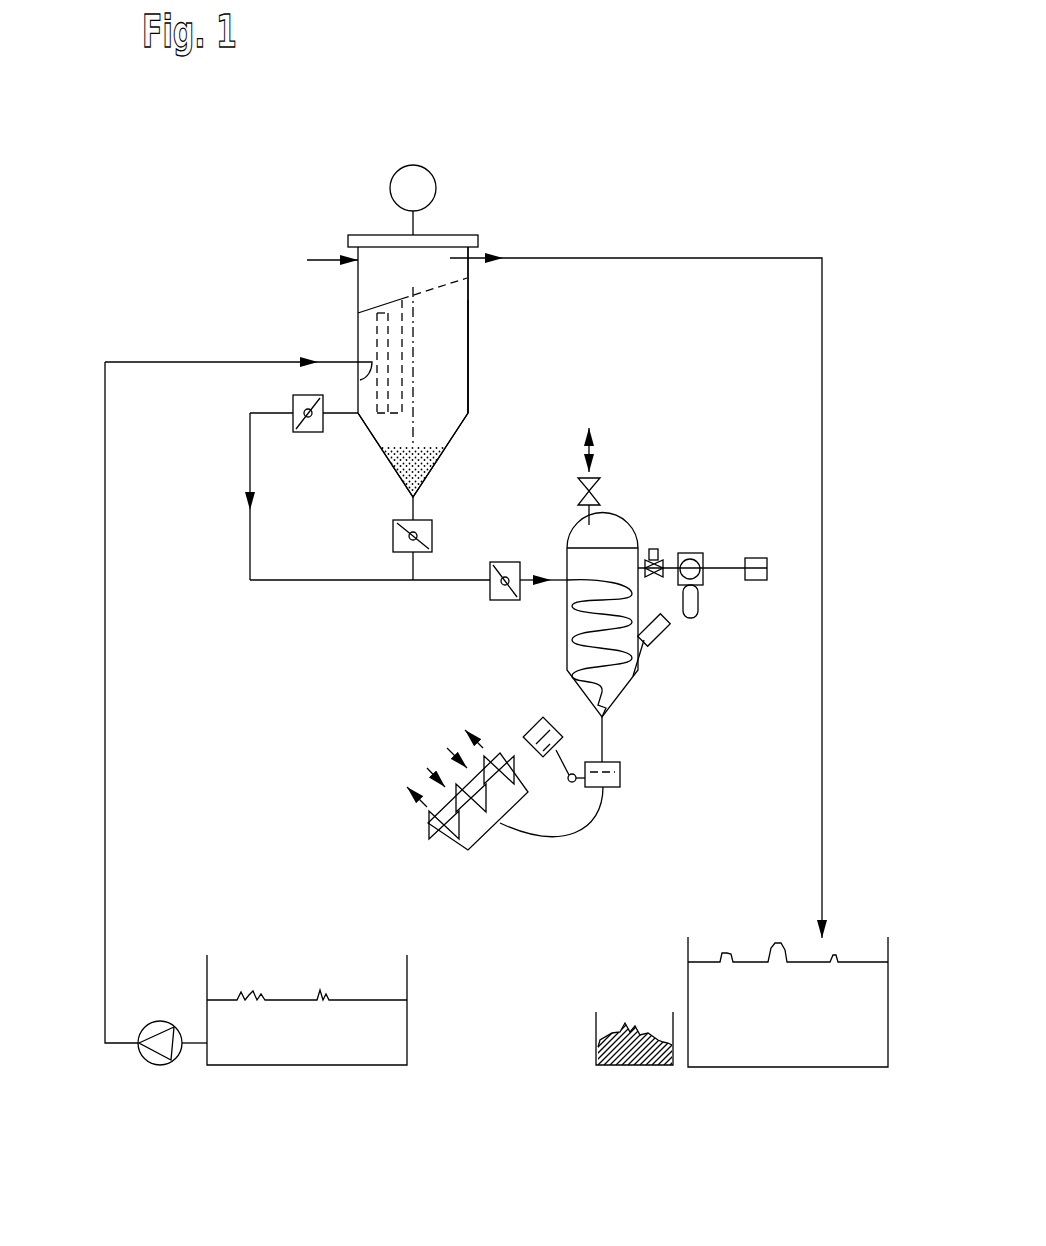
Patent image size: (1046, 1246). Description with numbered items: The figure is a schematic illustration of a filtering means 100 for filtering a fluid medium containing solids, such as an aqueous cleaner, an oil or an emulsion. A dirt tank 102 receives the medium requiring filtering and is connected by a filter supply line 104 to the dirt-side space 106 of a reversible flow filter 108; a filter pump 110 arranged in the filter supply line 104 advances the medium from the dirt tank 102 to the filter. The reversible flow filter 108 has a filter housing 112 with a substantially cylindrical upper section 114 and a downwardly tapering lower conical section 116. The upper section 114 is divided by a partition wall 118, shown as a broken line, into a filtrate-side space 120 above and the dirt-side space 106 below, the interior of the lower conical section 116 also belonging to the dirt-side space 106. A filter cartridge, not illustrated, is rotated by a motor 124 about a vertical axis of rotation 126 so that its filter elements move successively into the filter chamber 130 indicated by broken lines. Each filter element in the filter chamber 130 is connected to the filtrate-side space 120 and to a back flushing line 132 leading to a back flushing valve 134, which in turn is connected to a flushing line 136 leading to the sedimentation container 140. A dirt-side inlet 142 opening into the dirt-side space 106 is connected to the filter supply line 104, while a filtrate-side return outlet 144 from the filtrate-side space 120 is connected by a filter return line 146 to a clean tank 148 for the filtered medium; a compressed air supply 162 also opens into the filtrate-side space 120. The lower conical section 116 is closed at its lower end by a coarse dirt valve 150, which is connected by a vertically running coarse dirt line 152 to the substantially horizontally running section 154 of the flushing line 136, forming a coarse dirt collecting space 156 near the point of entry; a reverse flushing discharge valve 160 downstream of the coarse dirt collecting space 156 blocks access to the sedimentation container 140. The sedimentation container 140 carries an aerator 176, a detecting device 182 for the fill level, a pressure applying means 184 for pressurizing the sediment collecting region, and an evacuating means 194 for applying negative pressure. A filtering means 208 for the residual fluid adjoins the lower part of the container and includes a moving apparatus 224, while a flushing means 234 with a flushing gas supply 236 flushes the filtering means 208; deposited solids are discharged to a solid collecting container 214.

The filtering means 100 is at (752, 206).
The dirt tank 102 is at (307, 1067).
The filter supply line 104 is at (105, 749).
The dirt-side space 106 is at (462, 374).
The reversible flow filter 108 is at (356, 194).
The filter pump 110 is at (152, 1066).
The filter housing 112 is at (473, 307).
The upper section 114 is at (469, 348).
The lower conical section 116 is at (457, 437).
The partition wall 118 is at (358, 303).
The filtrate-side space 120 is at (434, 281).
The motor 124 is at (413, 165).
The axis of rotation 126 is at (413, 410).
The filter chamber 130 is at (377, 330).
The back flushing line 132 is at (385, 430).
The back flushing valve 134 is at (298, 433).
The flushing line 136 is at (250, 552).
The sedimentation container 140 is at (632, 522).
The dirt-side inlet 142 is at (358, 382).
The filtrate-side return outlet 144 is at (453, 256).
The filter return line 146 is at (824, 672).
The clean tank 148 is at (787, 1068).
The coarse dirt valve 150 is at (432, 530).
The coarse dirt line 152 is at (412, 567).
The line 154 is at (280, 582).
The coarse dirt collecting space 156 is at (411, 588).
The reverse flushing discharge valve 160 is at (520, 570).
The compressed air supply 162 is at (318, 258).
The aerator 176 is at (607, 470).
The detecting device 182 is at (676, 640).
The pressure applying means 184 is at (705, 553).
The evacuating means 194 is at (428, 842).
The filtering means 208 is at (625, 776).
The solid collecting container 214 is at (635, 1067).
The moving apparatus 224 is at (543, 712).
The flushing means 234 is at (430, 752).
The flushing gas supply 236 is at (502, 743).